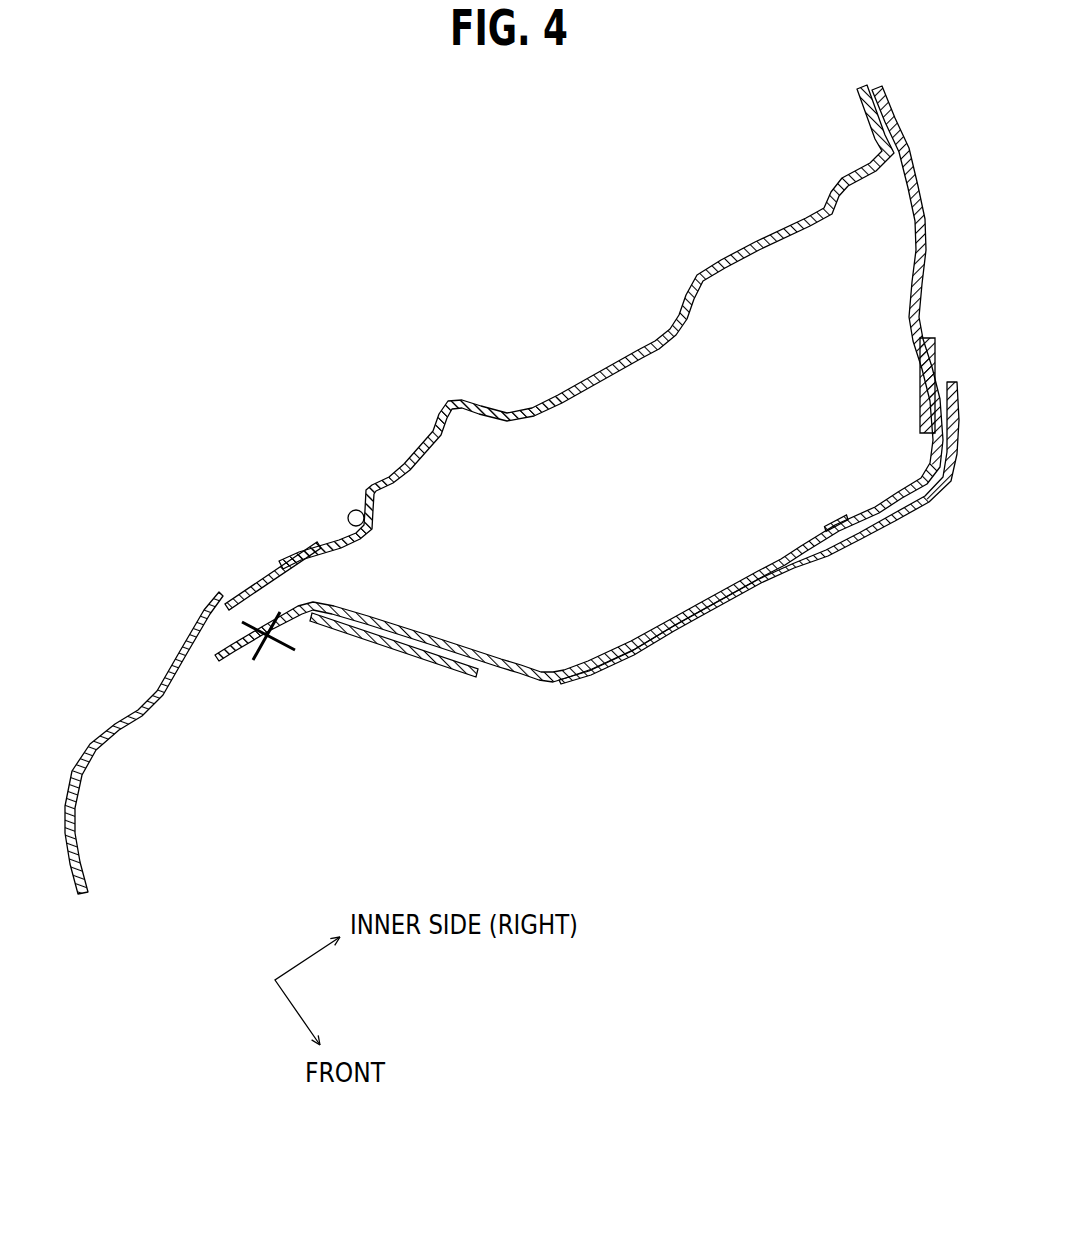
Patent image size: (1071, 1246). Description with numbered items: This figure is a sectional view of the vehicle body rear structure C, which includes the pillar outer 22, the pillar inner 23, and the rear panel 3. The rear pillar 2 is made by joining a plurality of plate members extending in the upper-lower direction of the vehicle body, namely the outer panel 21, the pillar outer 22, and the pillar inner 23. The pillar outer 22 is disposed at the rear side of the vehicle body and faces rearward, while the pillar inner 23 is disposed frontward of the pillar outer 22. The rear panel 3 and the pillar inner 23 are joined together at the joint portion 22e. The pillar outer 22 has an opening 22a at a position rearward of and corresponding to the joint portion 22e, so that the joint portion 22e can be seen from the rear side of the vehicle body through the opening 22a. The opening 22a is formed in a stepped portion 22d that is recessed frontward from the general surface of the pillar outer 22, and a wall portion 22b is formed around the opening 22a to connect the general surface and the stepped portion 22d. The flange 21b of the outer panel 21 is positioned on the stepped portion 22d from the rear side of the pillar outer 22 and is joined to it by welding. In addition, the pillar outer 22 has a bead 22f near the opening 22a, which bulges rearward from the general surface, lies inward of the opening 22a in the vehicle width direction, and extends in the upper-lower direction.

The vehicle body rear structure C is at (388, 215).
The rear pillar 2 is at (504, 489).
The outer panel 21 is at (121, 717).
The flange 21b is at (262, 568).
The pillar outer 22 is at (765, 235).
The opening 22a is at (281, 561).
The wall portion 22b is at (367, 531).
The stepped portion 22d is at (335, 532).
The joint portion 22e is at (277, 652).
The bead 22f is at (464, 400).
The pillar inner 23 is at (373, 652).
The rear panel 3 is at (697, 608).